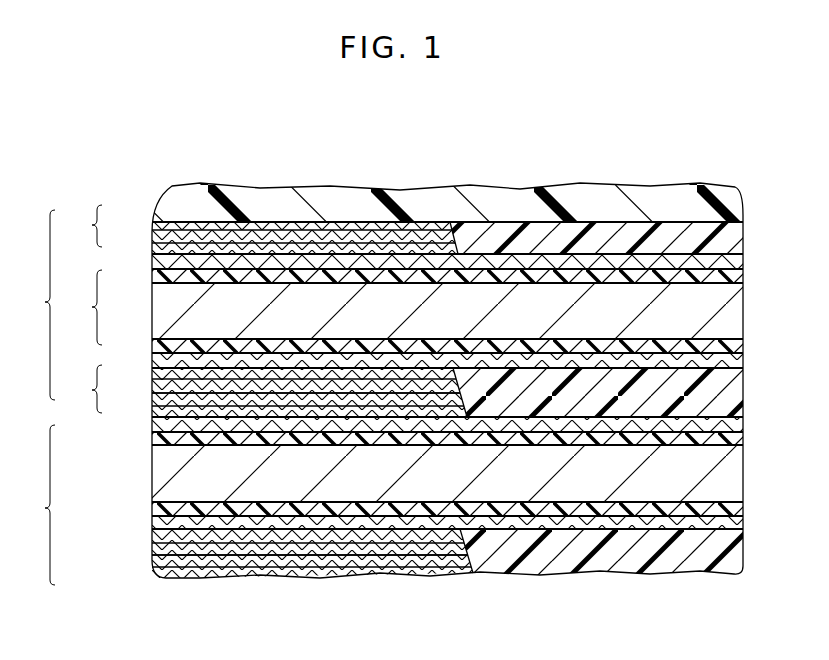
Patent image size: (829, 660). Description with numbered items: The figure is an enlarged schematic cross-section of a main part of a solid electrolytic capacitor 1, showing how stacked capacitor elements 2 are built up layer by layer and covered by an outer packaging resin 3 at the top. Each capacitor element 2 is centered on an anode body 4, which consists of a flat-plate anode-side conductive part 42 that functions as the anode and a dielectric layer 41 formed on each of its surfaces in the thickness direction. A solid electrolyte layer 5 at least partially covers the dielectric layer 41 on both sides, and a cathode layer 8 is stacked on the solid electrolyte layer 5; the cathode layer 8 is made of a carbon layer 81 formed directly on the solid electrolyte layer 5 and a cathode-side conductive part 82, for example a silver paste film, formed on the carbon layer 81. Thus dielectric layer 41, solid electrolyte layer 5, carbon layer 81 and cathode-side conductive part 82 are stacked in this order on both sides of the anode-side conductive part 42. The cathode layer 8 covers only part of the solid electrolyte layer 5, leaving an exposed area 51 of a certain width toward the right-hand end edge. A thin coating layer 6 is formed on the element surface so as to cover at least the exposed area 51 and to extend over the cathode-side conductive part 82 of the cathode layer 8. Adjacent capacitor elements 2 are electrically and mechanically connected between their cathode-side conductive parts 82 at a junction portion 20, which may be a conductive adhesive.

The solid electrolytic capacitor 1 is at (521, 183).
The capacitor element 2 is at (39, 397).
The outer packaging resin 3 is at (618, 193).
The anode body 4 is at (152, 497).
The dielectric layer 41 is at (154, 277).
The anode-side conductive part 42 is at (154, 311).
The solid electrolyte layer 5 is at (154, 262).
The exposed area 51 is at (738, 241).
The coating layer 6 is at (672, 230).
The cathode layer 8 is at (88, 575).
The carbon layer 81 is at (154, 238).
The cathode-side conductive part 82 is at (154, 226).
The junction portion 20 is at (275, 393).